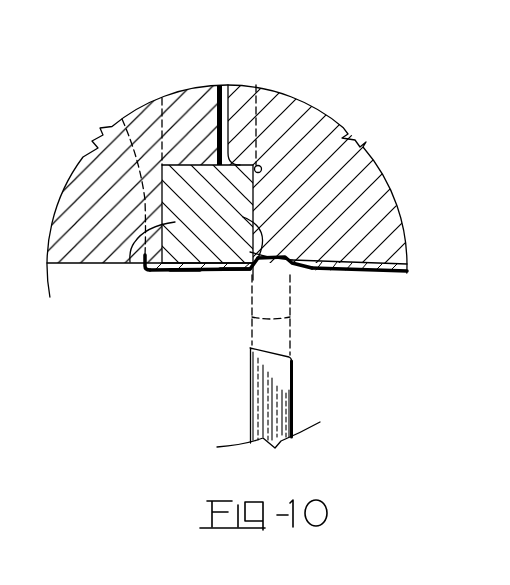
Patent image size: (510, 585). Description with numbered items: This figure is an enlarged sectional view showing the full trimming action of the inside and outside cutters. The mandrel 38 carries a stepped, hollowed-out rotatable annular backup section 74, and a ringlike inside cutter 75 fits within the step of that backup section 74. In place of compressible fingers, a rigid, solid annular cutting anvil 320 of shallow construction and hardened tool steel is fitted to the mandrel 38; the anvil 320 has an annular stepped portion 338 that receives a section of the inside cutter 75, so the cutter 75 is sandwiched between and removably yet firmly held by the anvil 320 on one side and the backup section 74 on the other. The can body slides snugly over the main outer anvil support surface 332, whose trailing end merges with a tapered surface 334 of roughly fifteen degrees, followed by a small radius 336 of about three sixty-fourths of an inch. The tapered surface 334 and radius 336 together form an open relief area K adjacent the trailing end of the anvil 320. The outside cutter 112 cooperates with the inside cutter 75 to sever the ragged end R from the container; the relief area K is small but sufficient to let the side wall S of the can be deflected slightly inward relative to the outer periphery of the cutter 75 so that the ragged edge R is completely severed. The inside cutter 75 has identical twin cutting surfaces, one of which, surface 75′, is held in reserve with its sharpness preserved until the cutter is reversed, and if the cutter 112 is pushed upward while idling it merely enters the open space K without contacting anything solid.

The mandrel 38 is at (137, 74).
The cutting anvil 320 is at (328, 68).
The annular stepped portion 338 is at (245, 164).
The backup section 74 is at (132, 174).
The inside cutter 75 is at (222, 222).
The cutting surface 75′ is at (130, 262).
The ragged end R is at (184, 272).
The small radius 336 is at (185, 270).
The relief area K is at (259, 258).
The tapered surface 334 is at (289, 272).
The main outer anvil support surface 332 is at (360, 272).
The side wall S is at (391, 273).
The outside cutter 112 is at (292, 390).